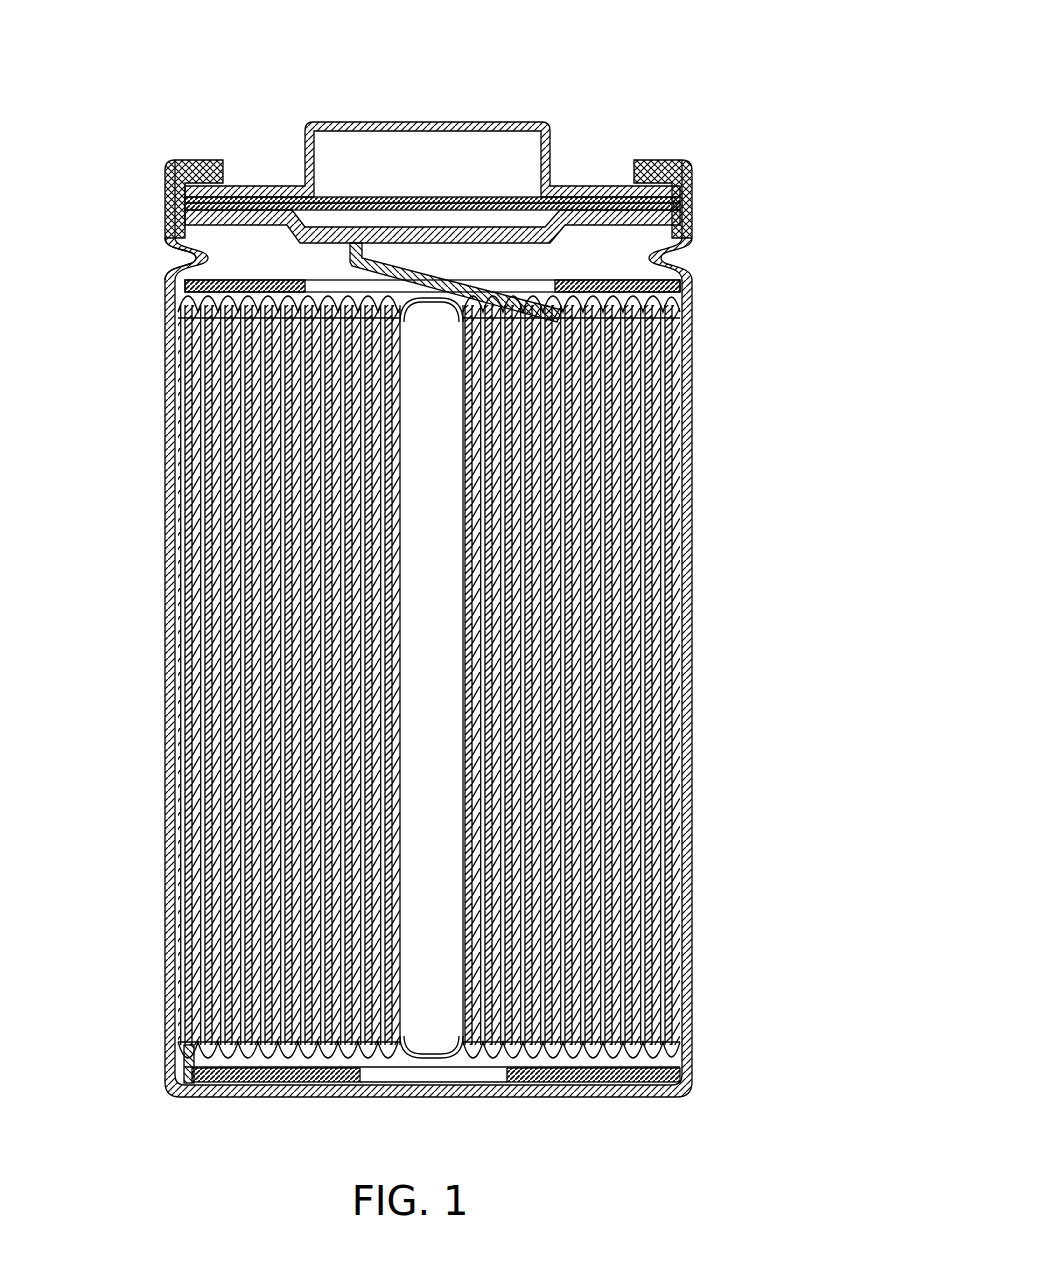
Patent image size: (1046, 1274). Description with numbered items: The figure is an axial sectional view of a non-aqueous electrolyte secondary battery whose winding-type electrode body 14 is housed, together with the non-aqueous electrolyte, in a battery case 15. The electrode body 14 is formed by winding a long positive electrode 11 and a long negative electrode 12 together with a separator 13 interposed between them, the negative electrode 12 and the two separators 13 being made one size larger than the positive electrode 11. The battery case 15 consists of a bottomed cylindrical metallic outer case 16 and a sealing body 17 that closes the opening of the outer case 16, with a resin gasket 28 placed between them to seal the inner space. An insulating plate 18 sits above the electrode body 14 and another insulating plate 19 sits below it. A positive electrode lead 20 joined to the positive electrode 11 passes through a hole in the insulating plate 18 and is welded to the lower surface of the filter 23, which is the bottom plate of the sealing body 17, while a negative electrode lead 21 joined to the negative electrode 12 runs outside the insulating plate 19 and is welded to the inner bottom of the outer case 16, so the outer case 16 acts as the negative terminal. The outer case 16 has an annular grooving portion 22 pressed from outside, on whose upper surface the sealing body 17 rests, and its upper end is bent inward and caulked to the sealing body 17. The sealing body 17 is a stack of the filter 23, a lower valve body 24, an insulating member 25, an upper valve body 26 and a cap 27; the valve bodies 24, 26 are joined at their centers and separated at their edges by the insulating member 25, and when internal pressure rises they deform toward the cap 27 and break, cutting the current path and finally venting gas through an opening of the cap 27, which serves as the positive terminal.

The positive electrode 11 is at (680, 748).
The negative electrode 12 is at (680, 780).
The separator 13 is at (680, 812).
The electrode body 14 is at (795, 740).
The battery case 15 is at (676, 58).
The outer case 16 is at (652, 160).
The sealing body 17 is at (588, 186).
The insulating plate 18 is at (683, 285).
The insulating plate 19 is at (692, 1073).
The positive electrode lead 20 is at (348, 266).
The negative electrode lead 21 is at (186, 1075).
The grooving portion 22 is at (168, 260).
The filter 23 is at (433, 232).
The lower valve body 24 is at (321, 197).
The insulating member 25 is at (256, 196).
The upper valve body 26 is at (348, 203).
The cap 27 is at (505, 122).
The gasket 28 is at (693, 172).